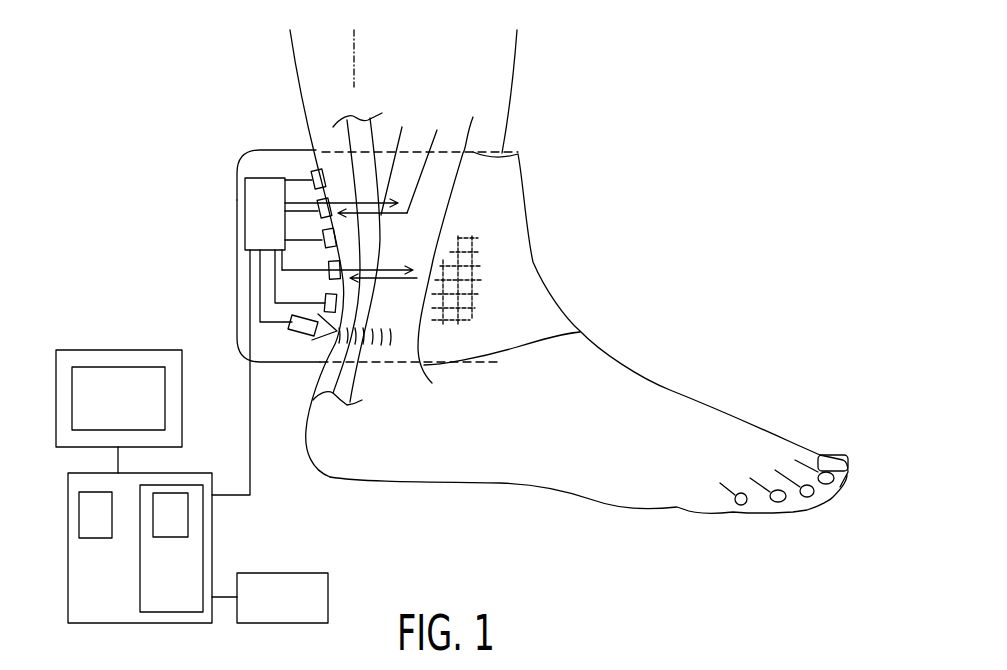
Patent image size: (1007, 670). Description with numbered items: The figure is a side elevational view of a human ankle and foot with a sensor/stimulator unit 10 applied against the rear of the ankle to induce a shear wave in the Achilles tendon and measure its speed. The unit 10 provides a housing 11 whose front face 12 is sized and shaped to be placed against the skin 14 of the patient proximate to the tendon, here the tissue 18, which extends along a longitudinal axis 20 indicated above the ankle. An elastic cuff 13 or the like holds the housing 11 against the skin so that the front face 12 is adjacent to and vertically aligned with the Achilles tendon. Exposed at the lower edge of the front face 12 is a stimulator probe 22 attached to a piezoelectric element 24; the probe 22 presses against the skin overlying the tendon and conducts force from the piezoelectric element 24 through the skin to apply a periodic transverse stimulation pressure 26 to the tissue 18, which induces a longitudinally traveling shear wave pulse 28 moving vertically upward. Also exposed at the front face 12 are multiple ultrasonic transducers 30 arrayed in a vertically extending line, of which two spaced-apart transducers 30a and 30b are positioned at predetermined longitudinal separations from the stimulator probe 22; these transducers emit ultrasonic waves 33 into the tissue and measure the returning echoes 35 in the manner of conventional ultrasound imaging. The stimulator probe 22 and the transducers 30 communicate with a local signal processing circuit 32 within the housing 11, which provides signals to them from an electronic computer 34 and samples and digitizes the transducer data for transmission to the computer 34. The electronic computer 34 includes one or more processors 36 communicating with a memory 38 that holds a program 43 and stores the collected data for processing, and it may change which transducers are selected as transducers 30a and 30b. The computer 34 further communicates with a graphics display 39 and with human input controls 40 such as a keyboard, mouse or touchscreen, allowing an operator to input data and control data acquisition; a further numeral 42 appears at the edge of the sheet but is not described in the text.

The sensor/stimulator unit 10 is at (247, 157).
The housing 11 is at (237, 333).
The front face 12 is at (303, 146).
The elastic cuff 13 is at (522, 220).
The skin 14 is at (293, 63).
The tissue 18 is at (358, 102).
The longitudinal axis 20 is at (358, 52).
The stimulator probe 22 is at (323, 333).
The piezoelectric element 24 is at (253, 358).
The periodic transverse stimulation pressure 26 is at (377, 352).
The shear wave pulse 28 is at (363, 315).
The ultrasonic transducers 30 is at (275, 297).
The ultrasonic transducer 30a is at (328, 278).
The ultrasonic transducer 30b is at (313, 177).
The local signal processing circuit 32 is at (252, 192).
The ultrasonic waves 33 is at (349, 190).
The electronic computer 34 is at (88, 625).
The returning echoes 35 is at (395, 194).
The processors 36 is at (90, 507).
The memory 38 is at (175, 597).
The graphics display 39 is at (93, 350).
The human input controls 40 is at (282, 613).
The input device 42 is at (586, 666).
The program 43 is at (183, 530).